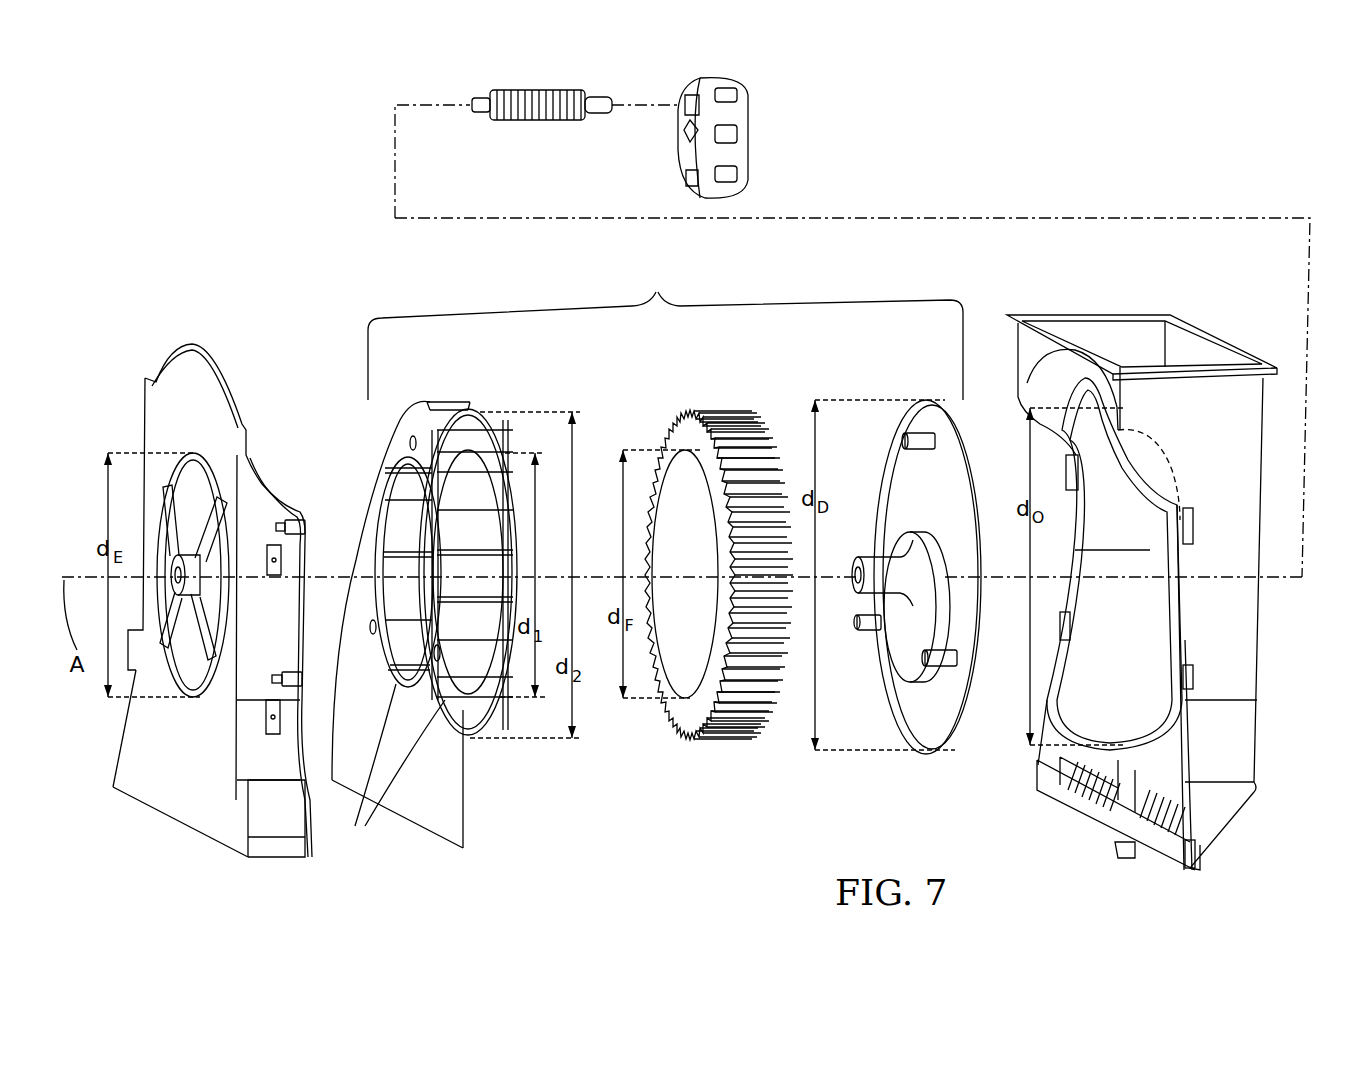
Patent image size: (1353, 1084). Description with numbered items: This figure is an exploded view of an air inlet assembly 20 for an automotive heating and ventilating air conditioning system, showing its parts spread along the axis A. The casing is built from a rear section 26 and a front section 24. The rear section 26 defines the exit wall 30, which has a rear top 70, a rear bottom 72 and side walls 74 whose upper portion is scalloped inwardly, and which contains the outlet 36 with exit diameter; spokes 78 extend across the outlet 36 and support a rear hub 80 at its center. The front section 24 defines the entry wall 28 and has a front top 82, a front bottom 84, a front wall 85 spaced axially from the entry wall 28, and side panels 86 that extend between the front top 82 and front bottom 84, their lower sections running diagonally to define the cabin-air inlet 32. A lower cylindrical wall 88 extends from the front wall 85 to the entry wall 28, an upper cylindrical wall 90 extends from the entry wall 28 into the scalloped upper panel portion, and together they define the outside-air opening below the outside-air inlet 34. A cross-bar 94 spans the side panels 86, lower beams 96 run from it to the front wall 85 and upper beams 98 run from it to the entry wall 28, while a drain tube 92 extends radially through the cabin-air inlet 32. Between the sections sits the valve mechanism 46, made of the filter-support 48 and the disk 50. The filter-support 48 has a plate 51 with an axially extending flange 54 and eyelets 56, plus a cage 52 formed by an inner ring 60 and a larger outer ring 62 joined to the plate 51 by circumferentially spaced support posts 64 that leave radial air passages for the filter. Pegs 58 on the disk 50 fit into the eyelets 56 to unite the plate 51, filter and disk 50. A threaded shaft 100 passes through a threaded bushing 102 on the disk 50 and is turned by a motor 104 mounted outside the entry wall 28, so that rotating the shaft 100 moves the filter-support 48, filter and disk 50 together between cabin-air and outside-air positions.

The air inlet assembly 20 is at (280, 172).
The front section 24 is at (1262, 632).
The rear section 26 is at (143, 378).
The entry wall 28 is at (1265, 422).
The exit wall 30 is at (143, 785).
The cabin-air inlet 32 is at (1160, 815).
The outside-air inlet 34 is at (1115, 325).
The outlet 36 is at (215, 540).
The valve mechanism 46 is at (657, 292).
The filter-support 48 is at (412, 822).
The disk 50 is at (965, 432).
The plate 51 is at (365, 517).
The cage 52 is at (375, 445).
The flange 54 is at (468, 830).
The eyelets 56 is at (355, 826).
The pegs 58 is at (918, 436).
The inner ring 60 is at (497, 480).
The outer ring 62 is at (505, 707).
The support posts 64 is at (447, 405).
The rear top 70 is at (192, 372).
The rear bottom 72 is at (180, 815).
The side walls 74 is at (300, 840).
The spokes 78 is at (208, 643).
The rear hub 80 is at (203, 455).
The front top 82 is at (1250, 355).
The front bottom 84 is at (1240, 800).
The front wall 85 is at (1020, 357).
The side panels 86 is at (1180, 392).
The lower cylindrical wall 88 is at (1128, 661).
The upper cylindrical wall 90 is at (1128, 510).
The drain tube 92 is at (1128, 848).
The cross-bar 94 is at (1062, 760).
The lower beams 96 is at (1090, 782).
The upper beams 98 is at (1130, 800).
The shaft 100 is at (532, 117).
The threaded bushing 102 is at (885, 562).
The motor 104 is at (745, 122).